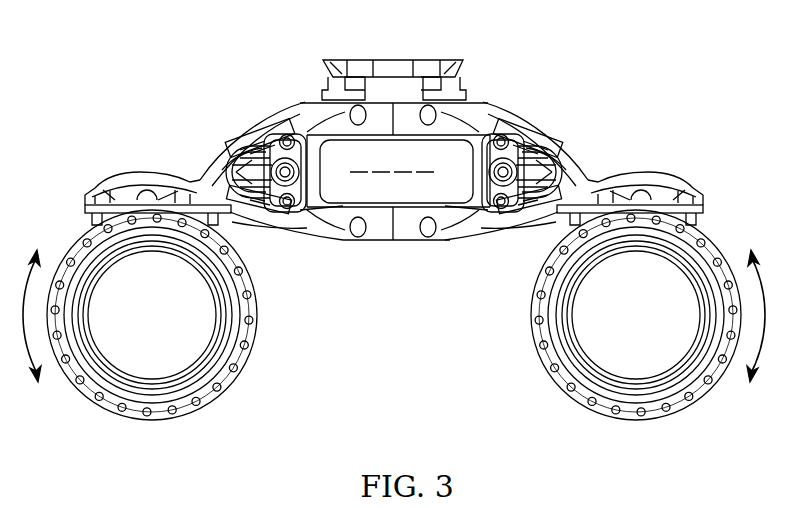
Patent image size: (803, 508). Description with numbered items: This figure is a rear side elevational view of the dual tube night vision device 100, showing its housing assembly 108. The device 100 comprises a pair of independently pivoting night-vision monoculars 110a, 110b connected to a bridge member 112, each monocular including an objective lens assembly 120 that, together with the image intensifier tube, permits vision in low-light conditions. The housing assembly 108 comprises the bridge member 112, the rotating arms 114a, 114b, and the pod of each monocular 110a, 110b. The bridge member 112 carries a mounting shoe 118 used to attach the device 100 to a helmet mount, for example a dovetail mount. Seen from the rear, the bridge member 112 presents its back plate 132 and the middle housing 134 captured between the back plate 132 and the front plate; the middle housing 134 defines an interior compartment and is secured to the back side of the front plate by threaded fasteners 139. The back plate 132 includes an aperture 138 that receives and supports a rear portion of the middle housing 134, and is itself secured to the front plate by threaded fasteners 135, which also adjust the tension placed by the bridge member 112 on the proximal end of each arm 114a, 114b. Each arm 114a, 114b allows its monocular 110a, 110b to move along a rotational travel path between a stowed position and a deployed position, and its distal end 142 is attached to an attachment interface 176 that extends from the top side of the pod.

The dual tube night vision device 100 is at (236, 143).
The housing assembly 108 is at (550, 160).
The night-vision monocular 110a is at (255, 327).
The night-vision monocular 110b is at (537, 323).
The bridge member 112 is at (530, 135).
The rotating arm 114a is at (143, 175).
The rotating arm 114b is at (645, 175).
The mounting shoe 118 is at (449, 68).
The objective lens assembly 120 is at (90, 397).
The back plate 132 is at (343, 222).
The middle housing 134 is at (368, 198).
The threaded fasteners 135 is at (287, 205).
The aperture 138 is at (473, 208).
The threaded fasteners 139 is at (287, 137).
The distal end 142 is at (113, 182).
The attachment interface 176 is at (90, 215).